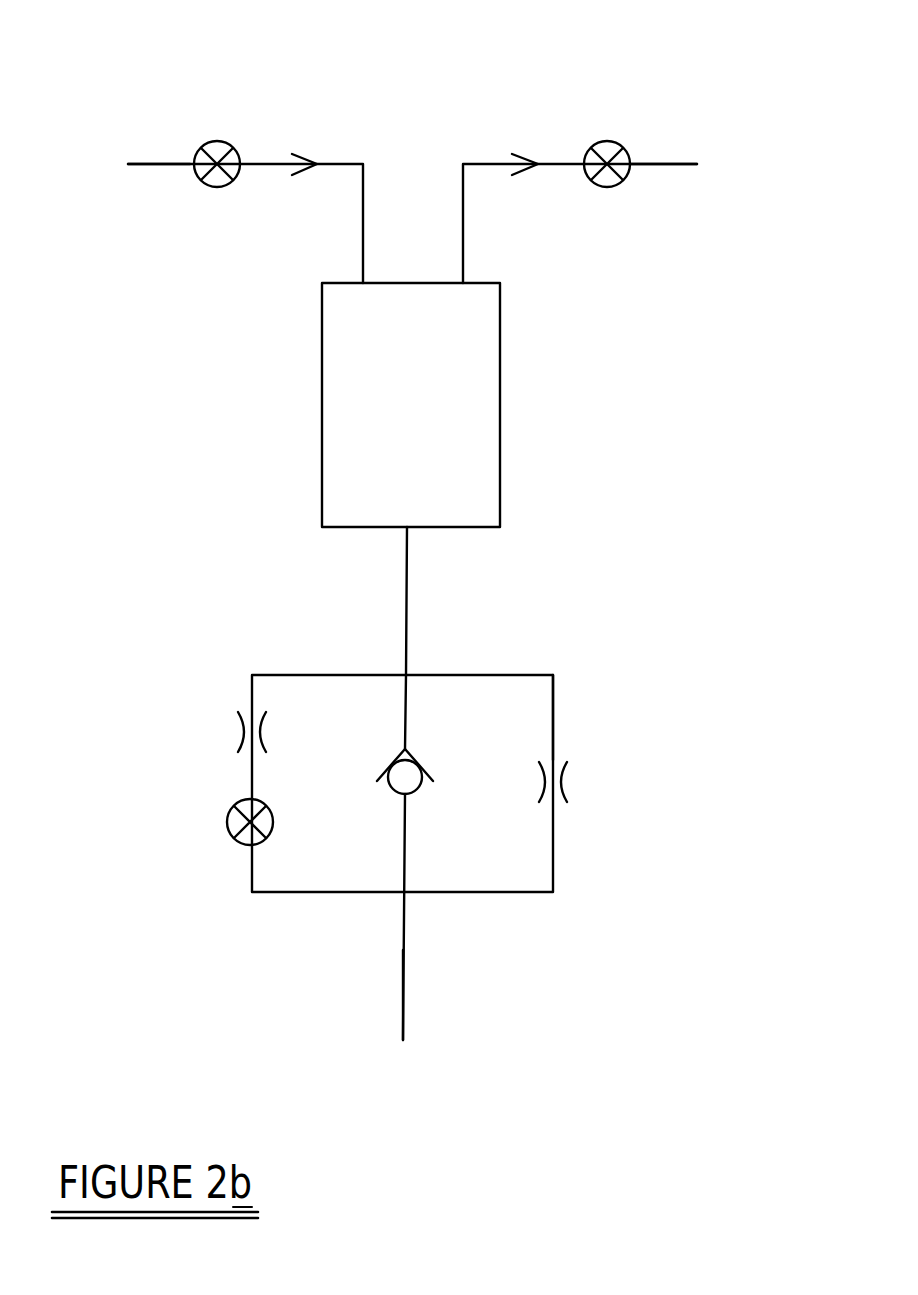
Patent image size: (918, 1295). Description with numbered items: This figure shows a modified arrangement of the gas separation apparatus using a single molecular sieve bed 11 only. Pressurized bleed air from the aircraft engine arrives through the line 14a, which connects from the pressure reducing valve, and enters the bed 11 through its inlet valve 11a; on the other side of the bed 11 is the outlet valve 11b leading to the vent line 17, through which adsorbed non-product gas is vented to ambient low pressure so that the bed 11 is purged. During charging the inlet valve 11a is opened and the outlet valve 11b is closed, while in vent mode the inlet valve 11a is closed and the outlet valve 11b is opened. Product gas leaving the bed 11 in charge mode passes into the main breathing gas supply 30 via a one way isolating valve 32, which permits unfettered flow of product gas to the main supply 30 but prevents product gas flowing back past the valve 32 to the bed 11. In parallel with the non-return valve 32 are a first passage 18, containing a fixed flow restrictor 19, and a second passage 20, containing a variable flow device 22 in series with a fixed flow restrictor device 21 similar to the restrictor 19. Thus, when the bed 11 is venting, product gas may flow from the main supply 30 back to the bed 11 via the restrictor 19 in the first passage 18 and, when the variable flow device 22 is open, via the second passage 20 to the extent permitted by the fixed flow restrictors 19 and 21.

The first bed 11 is at (457, 408).
The inlet valve 11a is at (233, 144).
The outlet valve 11b is at (585, 147).
The line 14a is at (157, 160).
The vent line 17 is at (663, 164).
The first passage 18 is at (553, 712).
The fixed flow restrictor 19 is at (567, 783).
The second passage 20 is at (287, 893).
The fixed flow restrictor device 21 is at (240, 732).
The variable flow device 22 is at (233, 809).
The main breathing gas supply 30 is at (403, 983).
The one way isolating valve 32 is at (418, 790).